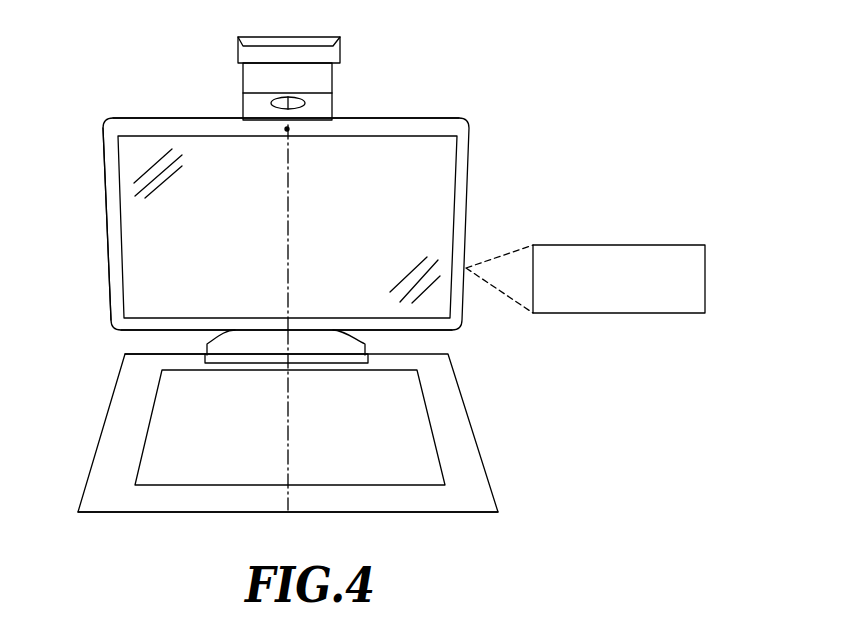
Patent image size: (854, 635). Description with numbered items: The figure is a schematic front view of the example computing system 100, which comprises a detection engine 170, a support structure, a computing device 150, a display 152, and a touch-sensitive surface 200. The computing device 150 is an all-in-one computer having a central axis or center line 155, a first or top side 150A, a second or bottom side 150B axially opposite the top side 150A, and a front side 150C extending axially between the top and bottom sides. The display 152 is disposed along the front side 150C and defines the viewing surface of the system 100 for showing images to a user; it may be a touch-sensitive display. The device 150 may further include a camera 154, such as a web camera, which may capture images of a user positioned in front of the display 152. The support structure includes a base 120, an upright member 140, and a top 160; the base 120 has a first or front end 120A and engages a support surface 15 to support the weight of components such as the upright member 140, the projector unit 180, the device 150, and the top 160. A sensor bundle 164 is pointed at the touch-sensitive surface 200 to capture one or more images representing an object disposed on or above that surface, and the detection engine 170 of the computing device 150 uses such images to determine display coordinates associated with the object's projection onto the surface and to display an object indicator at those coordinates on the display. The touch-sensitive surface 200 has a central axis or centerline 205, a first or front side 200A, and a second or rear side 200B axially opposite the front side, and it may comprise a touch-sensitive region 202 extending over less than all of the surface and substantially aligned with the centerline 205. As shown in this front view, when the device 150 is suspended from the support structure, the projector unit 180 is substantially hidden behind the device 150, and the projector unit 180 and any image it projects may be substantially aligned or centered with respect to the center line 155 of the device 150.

The support surface 15 is at (635, 443).
The computing system 100 is at (601, 144).
The base 120 is at (191, 353).
The front end 120A is at (235, 378).
The upright member 140 is at (230, 74).
The computing device 150 is at (482, 204).
The top side 150A is at (384, 119).
The bottom side 150B is at (413, 332).
The front side 150C is at (118, 227).
The display 152 is at (365, 192).
The camera 154 is at (287, 129).
The center line 155 is at (288, 160).
The top 160 is at (351, 30).
The sensor bundle 164 is at (272, 44).
The detection engine 170 is at (618, 313).
The projector unit 180 is at (230, 108).
The touch-sensitive surface 200 is at (453, 463).
The front side 200A is at (402, 512).
The rear side 200B is at (152, 356).
The touch-sensitive region 202 is at (420, 412).
The centerline 205 is at (288, 386).